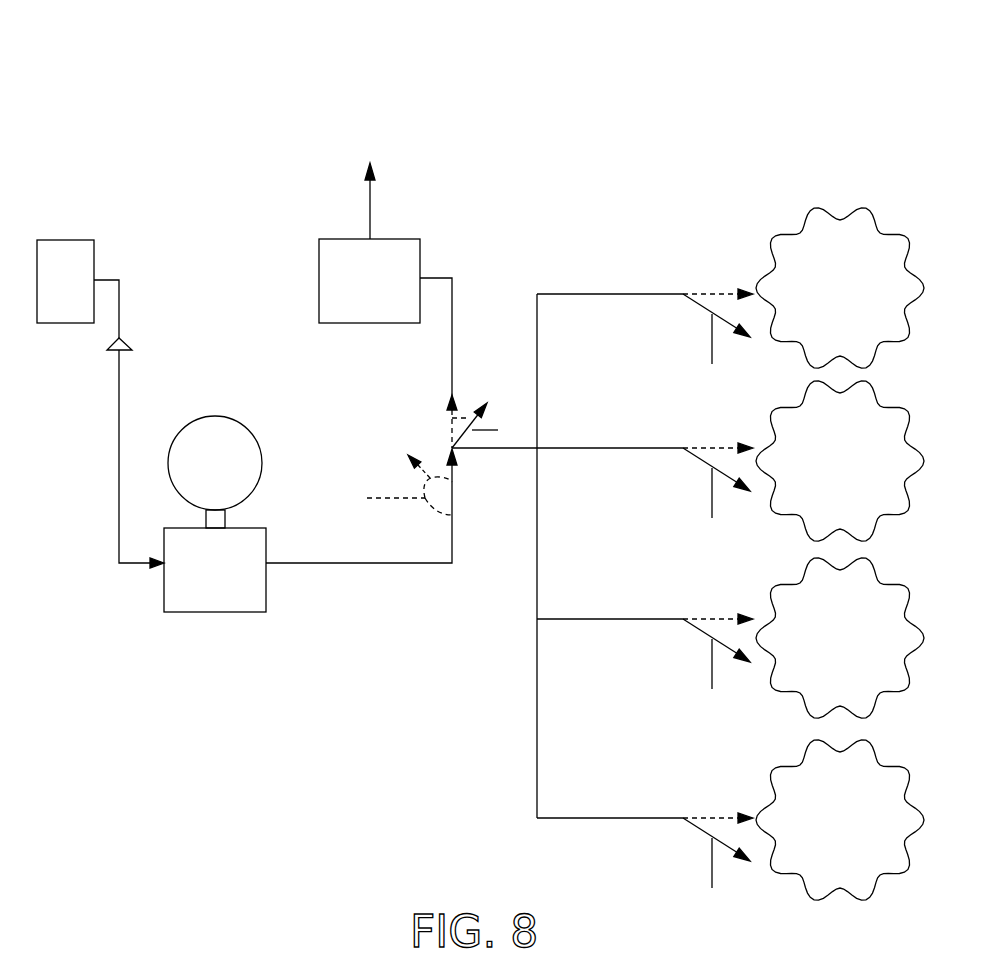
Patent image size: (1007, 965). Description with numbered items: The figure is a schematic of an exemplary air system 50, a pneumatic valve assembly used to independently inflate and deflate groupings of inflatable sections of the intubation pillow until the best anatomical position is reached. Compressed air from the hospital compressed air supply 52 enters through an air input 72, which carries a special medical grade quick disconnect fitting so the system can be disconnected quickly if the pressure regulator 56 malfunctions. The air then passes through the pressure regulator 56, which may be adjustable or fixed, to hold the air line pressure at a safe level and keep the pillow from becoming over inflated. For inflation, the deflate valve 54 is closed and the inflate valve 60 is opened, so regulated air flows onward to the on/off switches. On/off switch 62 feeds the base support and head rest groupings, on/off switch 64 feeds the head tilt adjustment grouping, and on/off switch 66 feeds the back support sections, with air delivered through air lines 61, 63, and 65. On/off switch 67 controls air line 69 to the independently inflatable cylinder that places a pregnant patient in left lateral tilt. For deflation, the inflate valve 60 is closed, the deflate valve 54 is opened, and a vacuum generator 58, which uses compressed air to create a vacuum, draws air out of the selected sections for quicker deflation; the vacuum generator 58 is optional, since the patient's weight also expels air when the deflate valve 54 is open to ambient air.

The air system 50 is at (308, 120).
The hospital compressed air supply 52 is at (65, 238).
The deflate valve 54 is at (474, 404).
The pressure regulator 56 is at (188, 612).
The vacuum generator 58 is at (400, 255).
The inflate valve 60 is at (452, 495).
The air line 61 is at (610, 279).
The on/off switch 62 is at (693, 290).
The air line 63 is at (610, 433).
The on/off switch 64 is at (693, 444).
The air line 65 is at (610, 604).
The on/off switch 66 is at (693, 615).
The on/off switch 67 is at (693, 814).
The air line 69 is at (610, 803).
The air input 72 is at (122, 338).